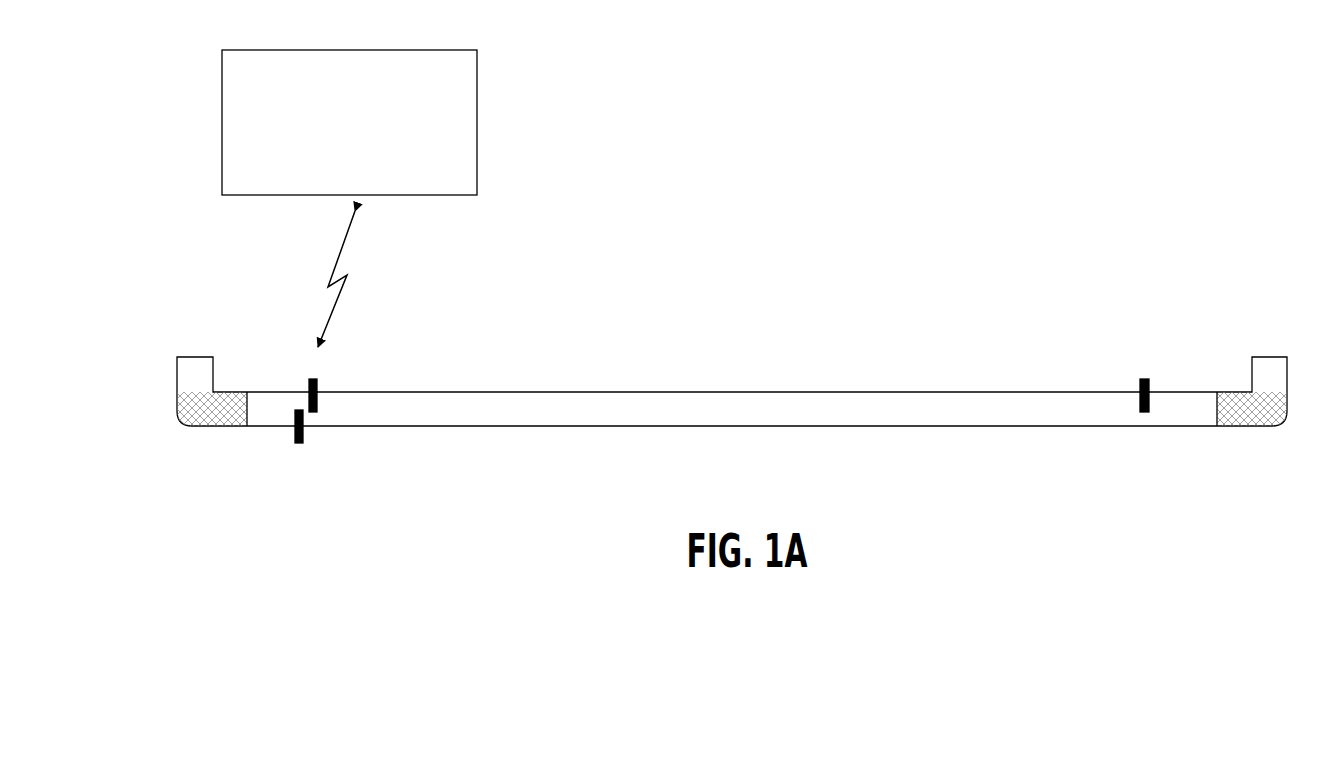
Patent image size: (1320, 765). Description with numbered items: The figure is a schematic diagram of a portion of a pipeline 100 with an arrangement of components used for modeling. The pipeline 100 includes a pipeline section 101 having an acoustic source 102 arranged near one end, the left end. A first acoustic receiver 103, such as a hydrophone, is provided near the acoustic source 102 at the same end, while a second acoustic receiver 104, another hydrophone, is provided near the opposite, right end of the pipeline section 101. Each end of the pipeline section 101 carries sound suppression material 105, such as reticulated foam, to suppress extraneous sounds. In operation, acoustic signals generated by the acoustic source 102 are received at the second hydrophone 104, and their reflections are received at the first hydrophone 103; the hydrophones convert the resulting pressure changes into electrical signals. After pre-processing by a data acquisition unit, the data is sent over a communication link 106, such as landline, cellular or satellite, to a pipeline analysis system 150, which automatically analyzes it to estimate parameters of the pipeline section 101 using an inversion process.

The pipeline 100 is at (836, 316).
The pipeline section 101 is at (497, 392).
The acoustic source 102 is at (312, 378).
The first acoustic receiver 103 is at (298, 443).
The second acoustic receiver 104 is at (1144, 379).
The sound suppression material 105 is at (210, 423).
The communication link 106 is at (330, 278).
The pipeline analysis system 150 is at (477, 110).